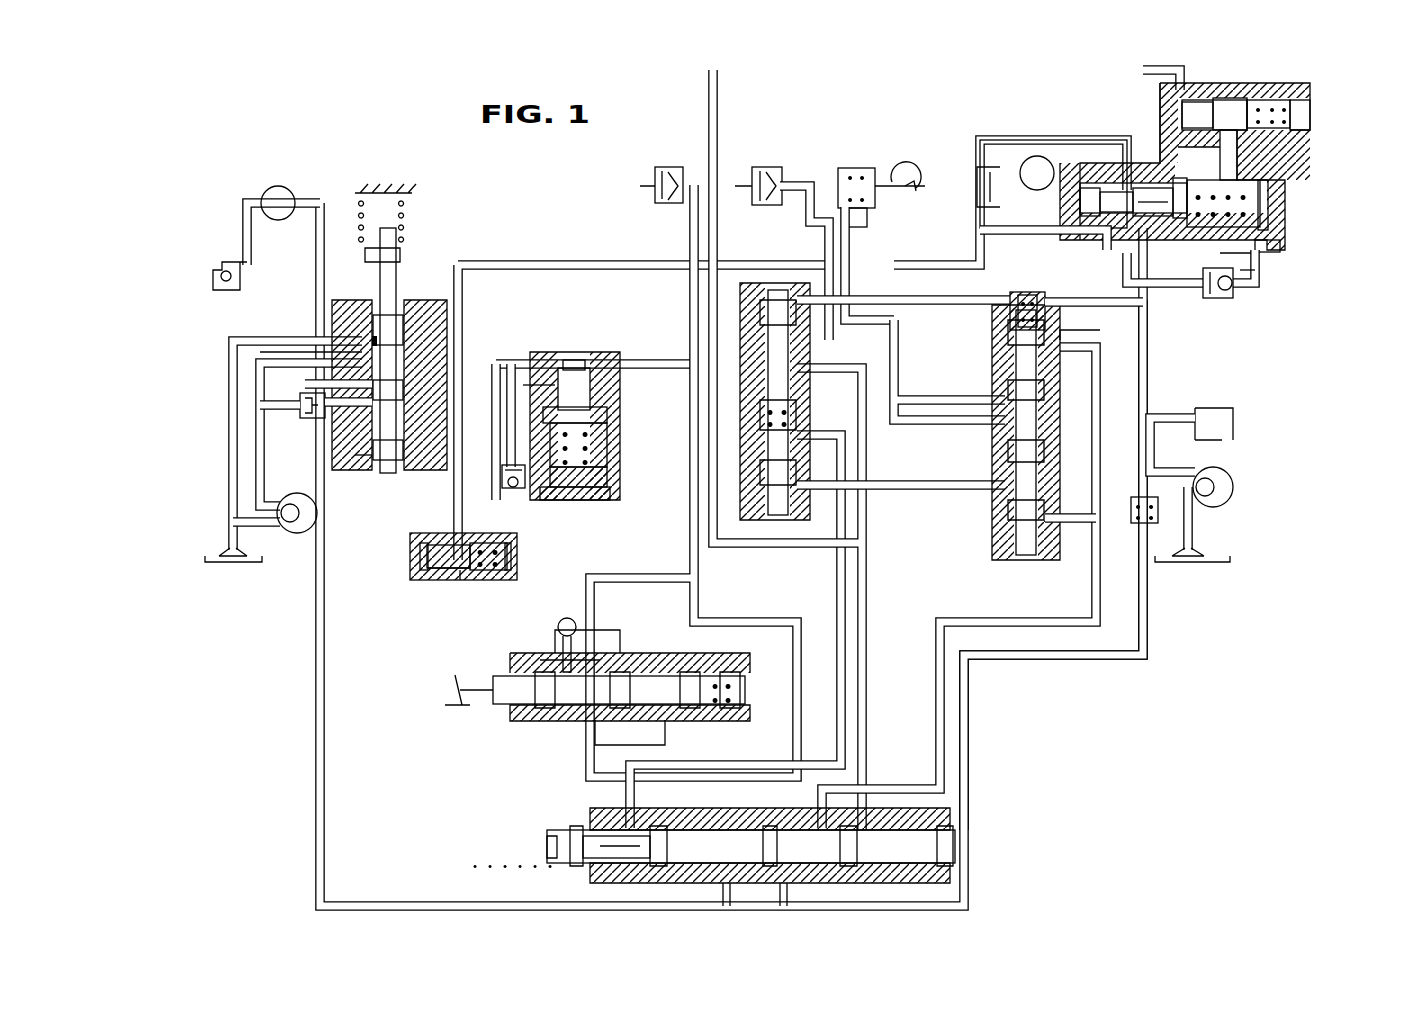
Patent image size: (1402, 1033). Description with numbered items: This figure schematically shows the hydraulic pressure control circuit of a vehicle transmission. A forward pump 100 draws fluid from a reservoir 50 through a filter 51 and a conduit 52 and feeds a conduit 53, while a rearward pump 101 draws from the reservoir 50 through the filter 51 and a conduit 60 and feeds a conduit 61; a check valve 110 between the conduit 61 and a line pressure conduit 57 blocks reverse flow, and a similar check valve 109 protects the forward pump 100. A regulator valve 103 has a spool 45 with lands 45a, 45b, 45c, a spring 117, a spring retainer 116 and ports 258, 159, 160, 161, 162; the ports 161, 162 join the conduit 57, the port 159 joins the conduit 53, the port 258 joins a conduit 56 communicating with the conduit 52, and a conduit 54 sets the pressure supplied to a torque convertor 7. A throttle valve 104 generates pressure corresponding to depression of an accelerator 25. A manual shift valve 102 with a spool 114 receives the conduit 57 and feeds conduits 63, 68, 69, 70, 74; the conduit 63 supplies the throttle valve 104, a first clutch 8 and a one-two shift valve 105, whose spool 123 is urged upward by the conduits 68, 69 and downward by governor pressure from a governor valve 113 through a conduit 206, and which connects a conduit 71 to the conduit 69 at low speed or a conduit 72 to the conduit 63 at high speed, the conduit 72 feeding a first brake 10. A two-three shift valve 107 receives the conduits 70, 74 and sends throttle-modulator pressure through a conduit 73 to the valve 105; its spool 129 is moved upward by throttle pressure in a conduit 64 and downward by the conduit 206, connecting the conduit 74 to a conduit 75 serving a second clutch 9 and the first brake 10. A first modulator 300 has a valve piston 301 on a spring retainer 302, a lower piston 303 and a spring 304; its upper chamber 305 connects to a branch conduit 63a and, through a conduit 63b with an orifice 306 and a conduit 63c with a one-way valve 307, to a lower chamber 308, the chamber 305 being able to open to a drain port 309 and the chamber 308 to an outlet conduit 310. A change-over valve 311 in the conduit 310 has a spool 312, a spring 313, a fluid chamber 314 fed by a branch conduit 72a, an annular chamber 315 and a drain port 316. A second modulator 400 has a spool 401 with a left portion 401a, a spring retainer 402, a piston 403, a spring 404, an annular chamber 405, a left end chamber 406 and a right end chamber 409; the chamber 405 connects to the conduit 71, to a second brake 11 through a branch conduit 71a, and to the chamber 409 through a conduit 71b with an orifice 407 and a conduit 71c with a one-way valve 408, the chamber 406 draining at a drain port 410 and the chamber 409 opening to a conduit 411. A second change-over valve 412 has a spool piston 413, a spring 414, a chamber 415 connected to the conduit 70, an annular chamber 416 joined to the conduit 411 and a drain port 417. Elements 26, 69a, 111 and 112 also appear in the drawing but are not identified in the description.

The torque convertor 7 is at (286, 190).
The first clutch 8 is at (670, 165).
The second clutch 9 is at (770, 165).
The first brake 10 is at (856, 165).
The second brake 11 is at (1020, 160).
The accelerator 25 is at (452, 685).
The lever arm 26 is at (540, 658).
The spool 45 is at (380, 288).
The land 45a is at (398, 322).
The land 45b is at (398, 390).
The land 45c is at (398, 462).
The reservoir 50 is at (212, 565).
The filter 51 is at (240, 565).
The conduit 52 is at (235, 522).
The conduit 53 is at (256, 461).
The conduit 54 is at (318, 250).
The conduit 56 is at (229, 396).
The line pressure conduit 57 is at (318, 738).
The conduit 60 is at (1192, 523).
The conduit 61 is at (1176, 470).
The conduit 63 is at (798, 710).
The branch conduit 63a is at (658, 364).
The conduit 63b is at (494, 380).
The conduit 63c is at (512, 372).
The conduit 64 is at (708, 562).
The conduit 68 is at (946, 742).
The conduit 69 is at (950, 764).
The port 69a is at (1068, 346).
The conduit 70 is at (866, 730).
The conduit 71 is at (975, 266).
The branch conduit 71a is at (1026, 140).
The first conduit 71b is at (1240, 280).
The second conduit 71c is at (1188, 288).
The conduit 72 is at (898, 360).
The branch conduit 72a is at (560, 265).
The conduit 73 is at (928, 484).
The conduit 74 is at (845, 700).
The conduit 75 is at (825, 246).
The forward pump 100 is at (296, 535).
The rearward pump 101 is at (1228, 470).
The manual shift valve 102 is at (545, 828).
The regulator valve 103 is at (388, 184).
The throttle valve 104 is at (722, 660).
The 1-2 shift valve 105 is at (1030, 290).
The 2-3 shift valve 107 is at (855, 278).
The check valve 109 is at (298, 408).
The check valve 110 is at (1130, 522).
The relief valve 111 is at (209, 279).
The ball 112 is at (615, 624).
The governor valve 113 is at (1218, 408).
The spool 114 is at (592, 845).
The spring retainer 116 is at (400, 258).
The spring 117 is at (406, 208).
The spool 123 is at (1037, 440).
The spool 129 is at (792, 340).
The port 159 is at (258, 352).
The port 160 is at (340, 384).
The port 161 is at (360, 420).
The port 162 is at (357, 458).
The conduit 206 is at (993, 296).
The port 258 is at (367, 342).
The first modulator 300 is at (600, 518).
The valve piston 301 is at (572, 358).
The spring retainer 302 is at (607, 415).
The lower piston 303 is at (607, 476).
The spring 304 is at (590, 440).
The upper chamber 305 is at (588, 368).
The orifice 306 is at (502, 490).
The one-way valve 307 is at (508, 552).
The lower chamber 308 is at (610, 495).
The drain port 309 is at (538, 380).
The outlet conduit 310 is at (522, 480).
The change-over valve 311 is at (480, 585).
The spool 312 is at (427, 556).
The spring 313 is at (510, 568).
The fluid chamber 314 is at (422, 542).
The annular chamber 315 is at (432, 572).
The drain port 316 is at (460, 580).
The second modulator 400 is at (1286, 238).
The spool 401 is at (1165, 185).
The left portion of spool 401a is at (1080, 210).
The spring retainer 402 is at (1182, 180).
The piston 403 is at (1270, 186).
The spring 404 is at (1252, 208).
The intermediate annular chamber 405 is at (1150, 188).
The left end chamber 406 is at (1110, 192).
The orifice 407 is at (1240, 255).
The one-way valve 408 is at (1228, 292).
The right end chamber 409 is at (1270, 246).
The drain port 410 is at (1045, 300).
The conduit 411 is at (1183, 135).
The second change-over valve 412 is at (1235, 95).
The spool piston 413 is at (1198, 100).
The spring 414 is at (1272, 100).
The chamber 415 is at (1177, 92).
The annular chamber 416 is at (1310, 115).
The drain port 417 is at (1238, 148).